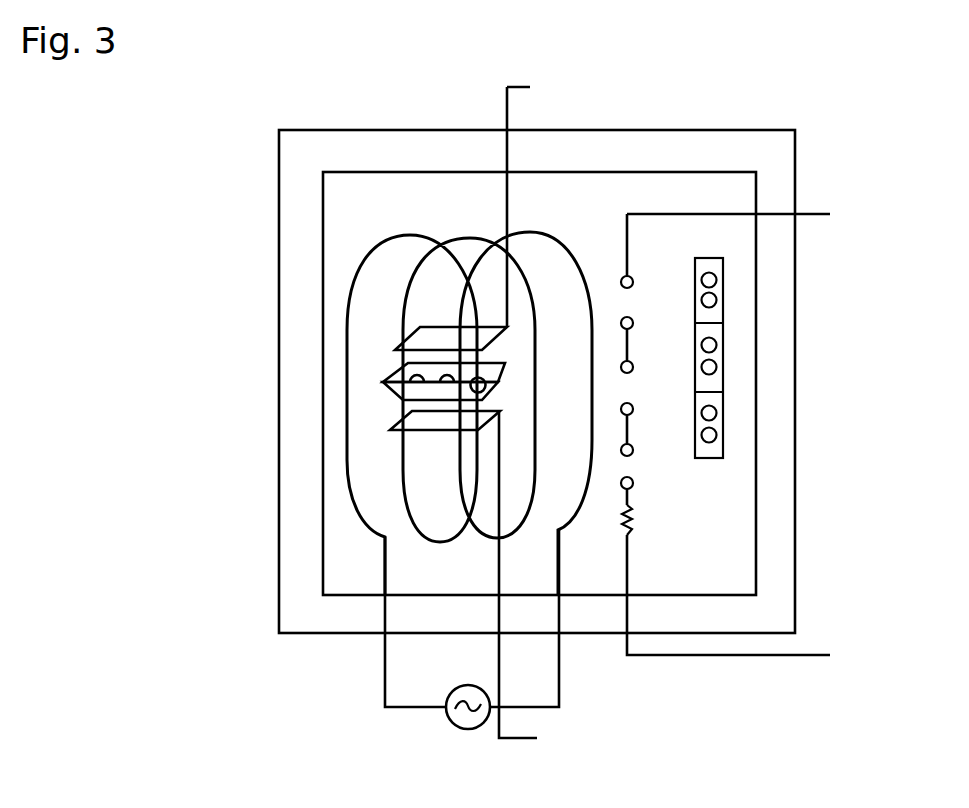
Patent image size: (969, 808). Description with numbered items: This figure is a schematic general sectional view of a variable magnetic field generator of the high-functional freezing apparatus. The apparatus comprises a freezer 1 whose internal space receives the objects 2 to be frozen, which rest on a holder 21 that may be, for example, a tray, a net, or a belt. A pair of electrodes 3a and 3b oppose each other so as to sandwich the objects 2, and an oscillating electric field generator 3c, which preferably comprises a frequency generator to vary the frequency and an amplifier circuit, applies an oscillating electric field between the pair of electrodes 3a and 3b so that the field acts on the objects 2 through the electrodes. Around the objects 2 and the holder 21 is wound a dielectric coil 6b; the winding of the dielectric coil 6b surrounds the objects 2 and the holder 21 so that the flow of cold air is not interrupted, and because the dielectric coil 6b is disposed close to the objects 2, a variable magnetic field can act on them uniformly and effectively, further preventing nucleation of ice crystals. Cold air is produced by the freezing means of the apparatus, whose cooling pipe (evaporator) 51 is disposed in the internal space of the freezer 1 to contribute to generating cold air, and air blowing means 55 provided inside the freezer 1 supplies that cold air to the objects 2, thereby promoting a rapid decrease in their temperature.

The freezer 1 is at (358, 124).
The objects 2 is at (488, 370).
The electrode 3a is at (412, 329).
The electrode 3b is at (404, 427).
The oscillating electric field generator 3c is at (538, 415).
The dielectric coil 6b is at (561, 242).
The holder 21 is at (385, 390).
The cooling pipe (evaporator) 51 is at (634, 483).
The air blowing means 55 is at (723, 283).